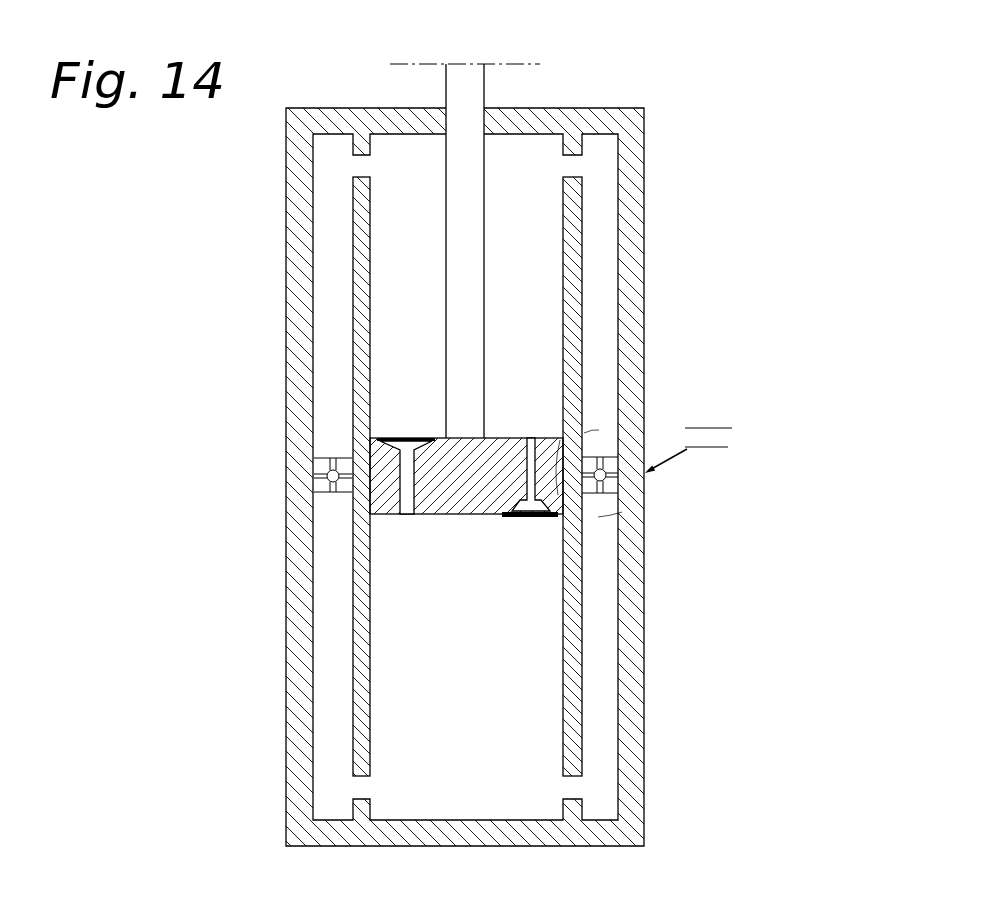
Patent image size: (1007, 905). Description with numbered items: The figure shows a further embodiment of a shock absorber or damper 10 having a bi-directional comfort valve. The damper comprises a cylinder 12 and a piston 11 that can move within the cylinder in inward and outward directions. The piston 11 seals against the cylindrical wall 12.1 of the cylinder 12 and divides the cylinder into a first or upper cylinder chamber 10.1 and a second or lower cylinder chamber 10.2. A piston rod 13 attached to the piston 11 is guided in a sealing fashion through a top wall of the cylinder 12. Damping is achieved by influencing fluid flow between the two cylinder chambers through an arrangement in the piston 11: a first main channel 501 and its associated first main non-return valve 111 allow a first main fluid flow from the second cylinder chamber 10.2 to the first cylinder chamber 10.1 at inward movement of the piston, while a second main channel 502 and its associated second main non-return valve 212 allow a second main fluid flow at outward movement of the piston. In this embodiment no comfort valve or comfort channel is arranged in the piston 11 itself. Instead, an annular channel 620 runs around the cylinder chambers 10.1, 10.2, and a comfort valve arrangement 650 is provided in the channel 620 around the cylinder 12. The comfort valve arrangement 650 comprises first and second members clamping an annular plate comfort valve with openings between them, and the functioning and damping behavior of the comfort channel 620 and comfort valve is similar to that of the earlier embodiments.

The shock absorber 10 is at (443, 429).
The cylinder 12 is at (333, 120).
The piston rod 13 is at (468, 82).
The first cylinder chamber 10.1 is at (403, 243).
The cylindrical wall 12.1 is at (360, 318).
The first main non-return valve 111 is at (398, 438).
The comfort valve arrangement 650 is at (326, 455).
The first main channel 501 is at (405, 497).
The piston 11 is at (469, 472).
The second cylinder chamber 10.2 is at (453, 672).
The annular channel 620 is at (330, 728).
The second main channel 502 is at (529, 488).
The second main non-return valve 212 is at (543, 520).